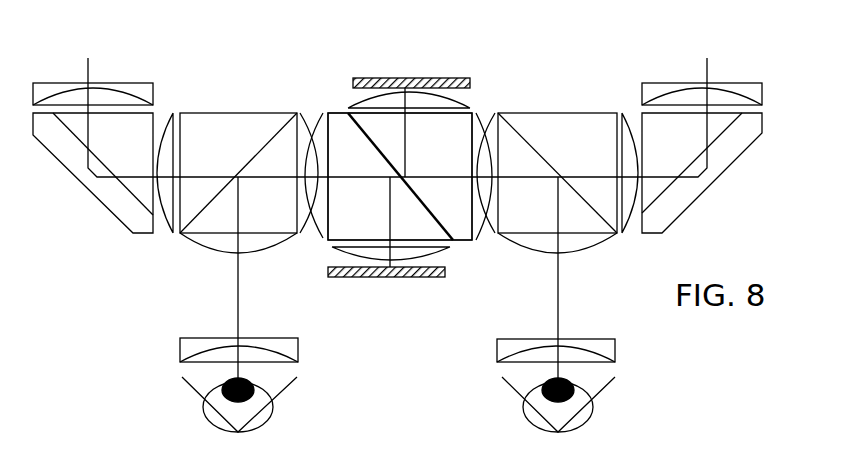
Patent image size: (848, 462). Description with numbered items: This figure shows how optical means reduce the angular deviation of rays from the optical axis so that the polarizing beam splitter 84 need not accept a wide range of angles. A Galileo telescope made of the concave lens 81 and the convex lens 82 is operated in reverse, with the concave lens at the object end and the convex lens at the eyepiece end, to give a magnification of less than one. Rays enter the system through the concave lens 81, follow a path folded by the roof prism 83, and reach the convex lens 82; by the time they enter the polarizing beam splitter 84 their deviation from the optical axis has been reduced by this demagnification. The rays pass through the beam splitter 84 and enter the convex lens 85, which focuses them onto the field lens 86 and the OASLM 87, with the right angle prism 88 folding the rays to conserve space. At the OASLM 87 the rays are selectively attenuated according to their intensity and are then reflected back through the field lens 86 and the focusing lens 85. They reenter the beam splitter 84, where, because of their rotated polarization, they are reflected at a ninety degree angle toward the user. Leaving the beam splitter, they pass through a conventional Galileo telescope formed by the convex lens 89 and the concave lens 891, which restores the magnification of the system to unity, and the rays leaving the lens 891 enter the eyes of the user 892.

The concave lens 81 is at (762, 86).
The convex lens 82 is at (628, 125).
The roof prism 83 is at (702, 197).
The polarizing beam splitter 84 is at (548, 158).
The convex lens 85 is at (488, 240).
The field lens 86 is at (460, 107).
The OASLM 87 is at (375, 78).
The right angle prism 88 is at (478, 240).
The convex lens 89 is at (580, 253).
The concave lens 891 is at (605, 339).
The eyes of the user 892 is at (593, 419).